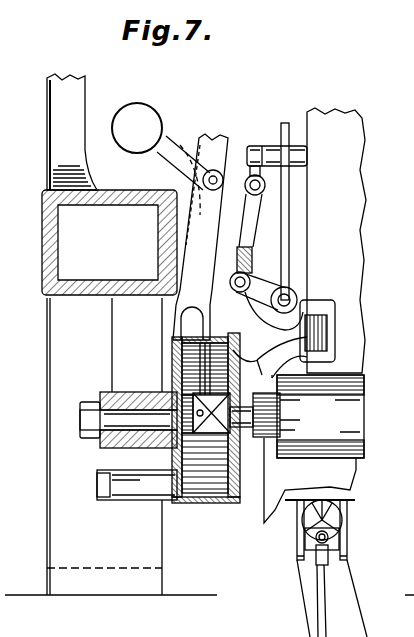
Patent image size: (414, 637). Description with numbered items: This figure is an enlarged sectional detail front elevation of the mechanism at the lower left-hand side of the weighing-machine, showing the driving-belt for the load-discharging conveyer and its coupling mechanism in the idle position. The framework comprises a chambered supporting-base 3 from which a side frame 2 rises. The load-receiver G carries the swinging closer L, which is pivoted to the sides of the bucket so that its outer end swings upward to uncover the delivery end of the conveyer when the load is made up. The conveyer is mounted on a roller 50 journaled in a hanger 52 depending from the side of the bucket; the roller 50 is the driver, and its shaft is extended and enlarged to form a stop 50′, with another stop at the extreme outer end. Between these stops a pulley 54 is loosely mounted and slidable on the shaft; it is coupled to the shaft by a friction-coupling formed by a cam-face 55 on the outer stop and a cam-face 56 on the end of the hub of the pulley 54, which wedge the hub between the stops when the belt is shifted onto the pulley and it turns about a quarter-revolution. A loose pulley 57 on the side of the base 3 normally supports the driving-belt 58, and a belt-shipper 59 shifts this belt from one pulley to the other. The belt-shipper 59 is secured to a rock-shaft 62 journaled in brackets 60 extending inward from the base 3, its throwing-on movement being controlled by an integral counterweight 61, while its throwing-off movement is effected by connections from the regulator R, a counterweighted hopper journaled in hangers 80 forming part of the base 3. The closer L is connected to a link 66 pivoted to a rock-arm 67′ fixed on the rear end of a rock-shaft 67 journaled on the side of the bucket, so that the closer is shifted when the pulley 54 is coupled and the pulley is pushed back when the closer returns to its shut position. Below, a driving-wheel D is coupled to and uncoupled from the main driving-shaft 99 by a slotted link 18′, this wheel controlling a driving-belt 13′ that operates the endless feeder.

The side frame 2 is at (72, 132).
The supporting-base 3 is at (47, 420).
The counterweight 61 is at (137, 128).
The brackets 60 is at (200, 186).
The rock-shaft 62 is at (215, 170).
The belt-shipper 59 is at (205, 222).
The link 66 is at (292, 209).
The closer L is at (284, 241).
The load-receiver G is at (376, 233).
The rock-arm 67′ is at (262, 290).
The rock-shaft 67 is at (286, 300).
The pulley 54 is at (231, 333).
The cam-face 55 is at (176, 374).
The cam-face 56 is at (229, 427).
The stop 50′ is at (282, 419).
The roller 50 is at (357, 411).
The hanger 52 is at (303, 354).
The hangers 80 is at (115, 454).
The loose pulley 57 is at (187, 452).
The driving-belt 58 is at (190, 503).
The regulator R is at (310, 480).
The driving-wheel D is at (328, 523).
The main driving-shaft 99 is at (330, 537).
The driving-belt 13′ is at (354, 601).
The slotted link 18′ is at (335, 604).